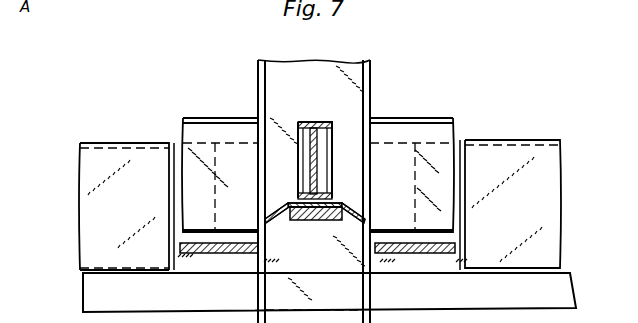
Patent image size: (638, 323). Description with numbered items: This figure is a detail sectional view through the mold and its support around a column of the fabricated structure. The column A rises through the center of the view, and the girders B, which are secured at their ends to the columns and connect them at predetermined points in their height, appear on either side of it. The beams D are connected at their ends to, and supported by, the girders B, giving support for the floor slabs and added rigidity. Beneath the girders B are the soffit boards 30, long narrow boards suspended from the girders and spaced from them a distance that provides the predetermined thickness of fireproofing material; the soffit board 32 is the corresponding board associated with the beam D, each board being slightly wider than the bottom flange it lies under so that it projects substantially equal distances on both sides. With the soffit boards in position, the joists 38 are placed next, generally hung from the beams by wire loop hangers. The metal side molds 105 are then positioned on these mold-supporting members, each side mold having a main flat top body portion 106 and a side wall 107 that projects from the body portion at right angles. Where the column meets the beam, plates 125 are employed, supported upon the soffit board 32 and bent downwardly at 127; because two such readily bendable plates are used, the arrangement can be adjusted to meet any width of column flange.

The column A is at (330, 68).
The girder B is at (203, 118).
The beam D is at (312, 122).
The soffit board 30 is at (197, 254).
The soffit board 32 is at (320, 221).
The joist 38 is at (88, 294).
The side mold 105 is at (92, 138).
The main flat top body portion 106 is at (126, 143).
The side wall 107 is at (86, 203).
The plate 125 is at (306, 196).
The downwardly bent portion 127 is at (276, 213).